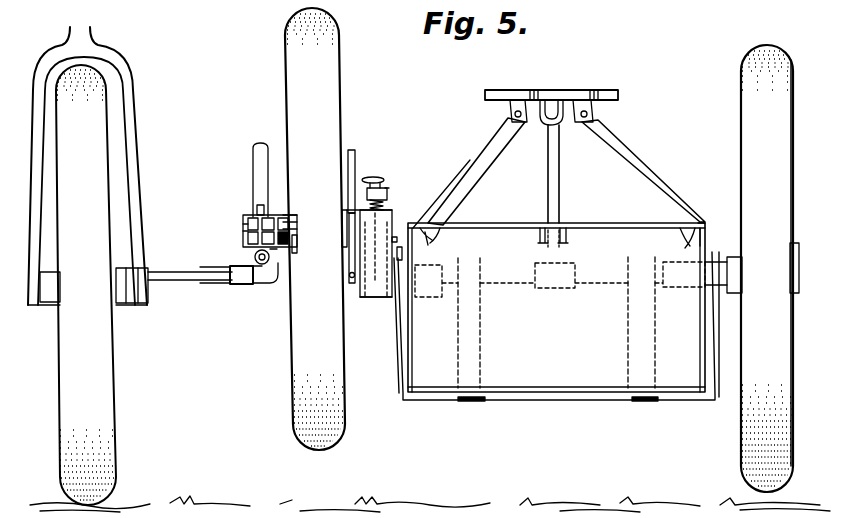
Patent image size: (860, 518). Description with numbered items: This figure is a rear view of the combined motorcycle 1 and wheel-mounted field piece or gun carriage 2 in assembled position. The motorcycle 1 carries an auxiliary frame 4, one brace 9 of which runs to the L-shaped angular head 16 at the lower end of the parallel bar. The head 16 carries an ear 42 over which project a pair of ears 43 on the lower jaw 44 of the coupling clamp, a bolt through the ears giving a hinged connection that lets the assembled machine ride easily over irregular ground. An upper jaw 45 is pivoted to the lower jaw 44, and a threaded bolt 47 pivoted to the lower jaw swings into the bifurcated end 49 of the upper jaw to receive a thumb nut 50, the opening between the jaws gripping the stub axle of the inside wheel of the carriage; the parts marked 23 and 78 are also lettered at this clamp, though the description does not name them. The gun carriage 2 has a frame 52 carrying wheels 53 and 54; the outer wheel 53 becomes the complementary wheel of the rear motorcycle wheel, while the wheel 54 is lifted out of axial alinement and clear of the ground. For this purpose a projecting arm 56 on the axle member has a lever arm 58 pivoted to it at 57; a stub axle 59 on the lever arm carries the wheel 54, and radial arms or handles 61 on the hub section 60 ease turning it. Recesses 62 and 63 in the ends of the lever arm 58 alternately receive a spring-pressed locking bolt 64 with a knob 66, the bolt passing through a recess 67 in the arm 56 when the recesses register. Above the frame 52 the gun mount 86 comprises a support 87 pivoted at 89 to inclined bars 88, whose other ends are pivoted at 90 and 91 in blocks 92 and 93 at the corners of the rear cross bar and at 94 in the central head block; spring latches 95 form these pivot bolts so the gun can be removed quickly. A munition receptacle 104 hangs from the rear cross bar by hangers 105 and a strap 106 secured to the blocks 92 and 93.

The motorcycle 1 is at (135, 132).
The wheel-mounted field piece or gun carriage 2 is at (302, 229).
The auxiliary frame 4 is at (253, 146).
The brace 9 is at (160, 271).
The L-shaped angular head 16 is at (262, 283).
The clamp block 23 is at (257, 223).
The ear 42 is at (255, 257).
The ears 43 is at (283, 250).
The lower jaw 44 is at (277, 253).
The upper jaw 45 is at (290, 233).
The threaded bolt 47 is at (258, 207).
The bifurcated end 49 is at (280, 220).
The thumb nut 50 is at (243, 230).
The frame 52 is at (518, 290).
The outer wheel 53 is at (743, 450).
The wheel 54 is at (317, 448).
The projecting arm 56 is at (395, 210).
The pivot 57 is at (368, 297).
The lever arm 58 is at (374, 177).
The stub axle 59 is at (283, 222).
The hub section 60 is at (356, 148).
The radial arms or handles 61 is at (373, 124).
The recess 62 is at (398, 300).
The recess 63 is at (290, 228).
The locking bolt 64 is at (390, 190).
The hand grip piece or knob 66 is at (395, 148).
The recess 67 is at (392, 235).
The clamp bolt 78 is at (243, 224).
The gun mount or support 86 is at (551, 83).
The support 87 is at (526, 90).
The inclined bars 88 is at (480, 168).
The pivot 89 is at (543, 130).
The pivot 90 is at (704, 222).
The pivot 91 is at (460, 170).
The block 92 is at (688, 290).
The block 93 is at (430, 298).
The pivot 94 is at (563, 240).
The spring latches 95 is at (440, 242).
The munition receptacle 104 is at (556, 307).
The hangers 105 is at (475, 378).
The strap 106 is at (396, 350).